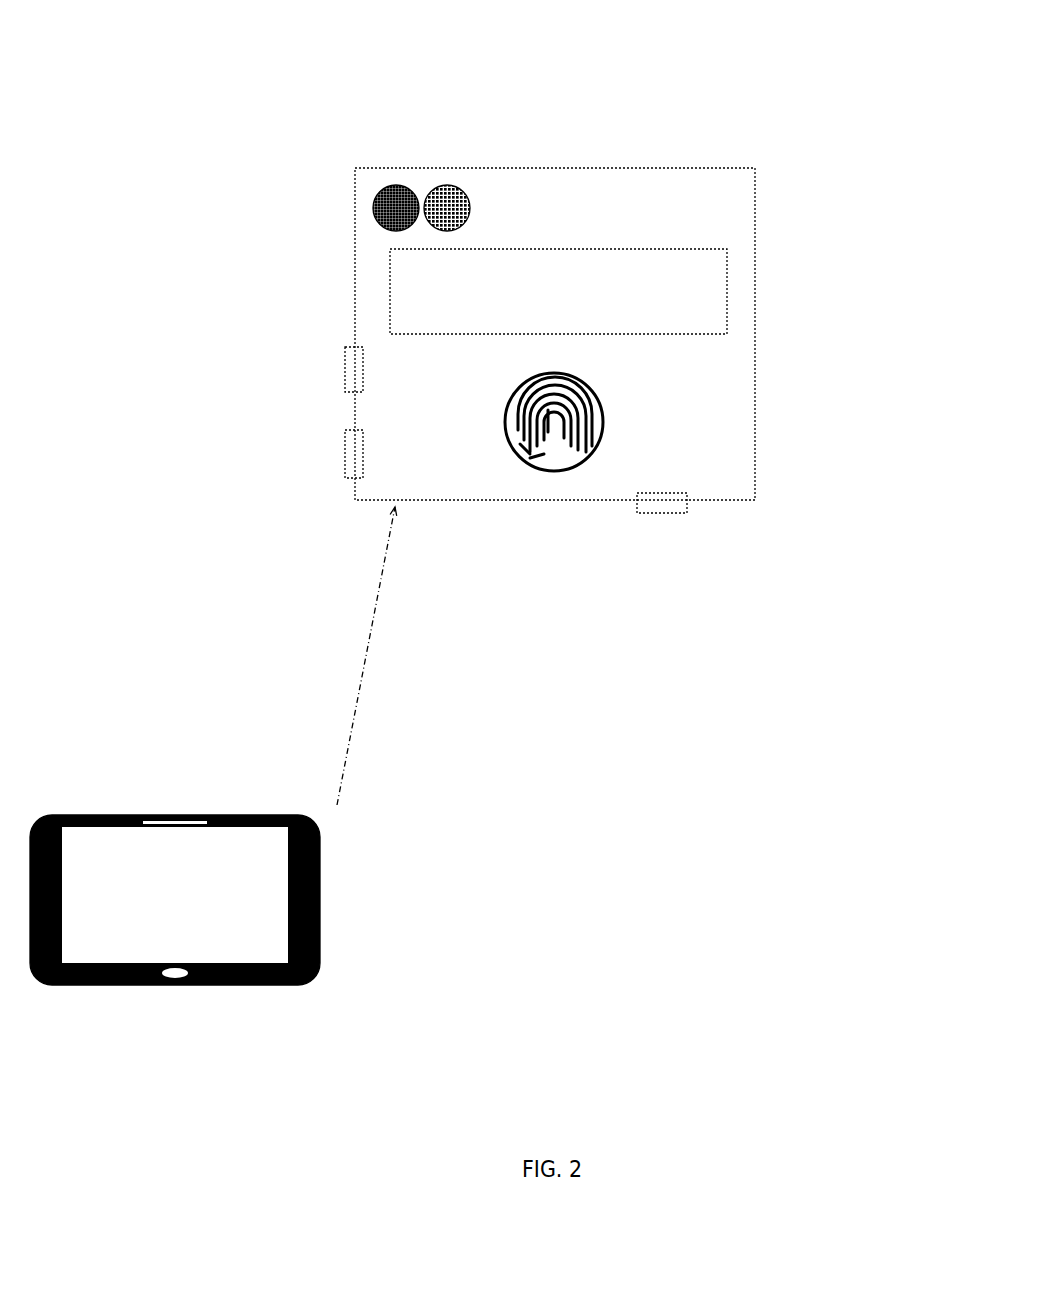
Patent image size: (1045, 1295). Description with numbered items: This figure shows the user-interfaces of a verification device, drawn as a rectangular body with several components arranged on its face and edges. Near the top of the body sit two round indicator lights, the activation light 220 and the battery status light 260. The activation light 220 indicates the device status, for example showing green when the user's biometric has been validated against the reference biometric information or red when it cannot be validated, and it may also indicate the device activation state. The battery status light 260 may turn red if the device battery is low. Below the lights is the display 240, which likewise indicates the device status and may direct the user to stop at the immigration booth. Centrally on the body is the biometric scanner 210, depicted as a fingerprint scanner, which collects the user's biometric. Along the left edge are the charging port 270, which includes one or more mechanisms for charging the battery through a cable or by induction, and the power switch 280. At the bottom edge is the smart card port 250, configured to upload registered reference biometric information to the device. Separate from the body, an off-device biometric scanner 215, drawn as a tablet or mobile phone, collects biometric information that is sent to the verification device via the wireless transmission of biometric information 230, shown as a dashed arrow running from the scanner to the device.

The biometric scanner 210 is at (555, 472).
The off-device biometric scanner 215 is at (175, 900).
The activation light 220 is at (183, 55).
The wireless transmission of biometric information 230 is at (367, 657).
The display 240 is at (640, 248).
The smart card port 250 is at (665, 513).
The battery status light 260 is at (447, 187).
The charging port 270 is at (345, 368).
The power switch 280 is at (343, 455).